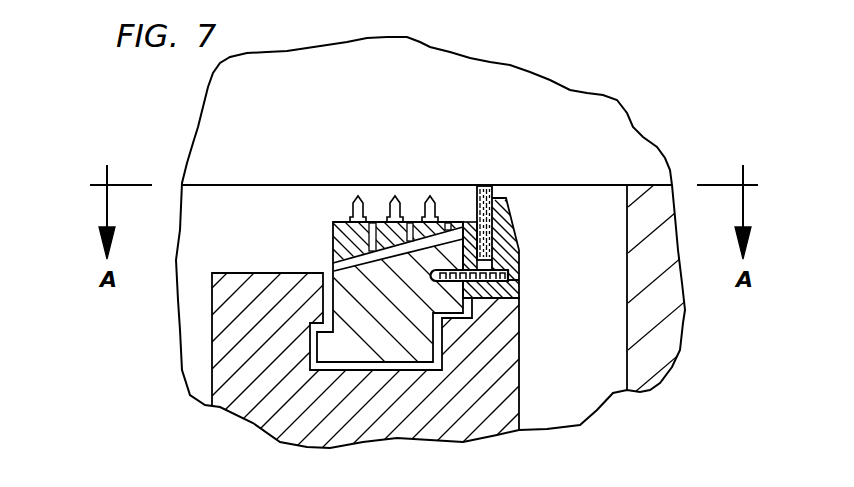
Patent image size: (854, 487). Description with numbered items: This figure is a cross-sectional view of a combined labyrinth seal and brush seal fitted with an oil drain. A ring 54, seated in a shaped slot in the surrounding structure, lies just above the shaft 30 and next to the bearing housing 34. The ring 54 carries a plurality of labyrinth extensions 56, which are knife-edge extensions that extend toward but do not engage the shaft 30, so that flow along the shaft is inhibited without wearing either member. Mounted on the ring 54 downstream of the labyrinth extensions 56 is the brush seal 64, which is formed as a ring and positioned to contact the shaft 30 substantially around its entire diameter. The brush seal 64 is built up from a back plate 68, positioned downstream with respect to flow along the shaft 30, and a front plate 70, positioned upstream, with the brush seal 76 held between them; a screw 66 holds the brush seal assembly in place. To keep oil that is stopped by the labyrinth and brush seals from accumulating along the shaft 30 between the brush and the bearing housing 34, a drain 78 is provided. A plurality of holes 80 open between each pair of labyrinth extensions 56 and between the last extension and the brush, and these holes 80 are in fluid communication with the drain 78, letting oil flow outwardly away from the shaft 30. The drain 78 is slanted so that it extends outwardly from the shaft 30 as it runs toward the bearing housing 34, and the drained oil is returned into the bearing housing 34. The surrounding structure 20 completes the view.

The housing 20 is at (627, 386).
The shaft 30 is at (348, 105).
The bearing housing 34 is at (212, 305).
The ring 54 is at (376, 345).
The labyrinth extensions 56 is at (430, 195).
The brush seal 64 is at (489, 233).
The screw 66 is at (494, 287).
The back plate 68 is at (517, 231).
The front plate 70 is at (465, 221).
The brush seal 76 is at (493, 196).
The drain 78 is at (363, 264).
The holes 80 is at (450, 222).